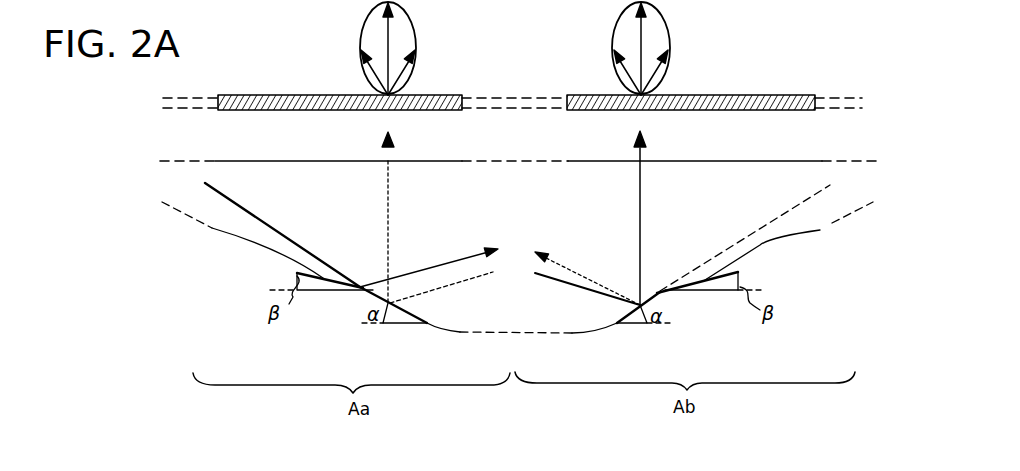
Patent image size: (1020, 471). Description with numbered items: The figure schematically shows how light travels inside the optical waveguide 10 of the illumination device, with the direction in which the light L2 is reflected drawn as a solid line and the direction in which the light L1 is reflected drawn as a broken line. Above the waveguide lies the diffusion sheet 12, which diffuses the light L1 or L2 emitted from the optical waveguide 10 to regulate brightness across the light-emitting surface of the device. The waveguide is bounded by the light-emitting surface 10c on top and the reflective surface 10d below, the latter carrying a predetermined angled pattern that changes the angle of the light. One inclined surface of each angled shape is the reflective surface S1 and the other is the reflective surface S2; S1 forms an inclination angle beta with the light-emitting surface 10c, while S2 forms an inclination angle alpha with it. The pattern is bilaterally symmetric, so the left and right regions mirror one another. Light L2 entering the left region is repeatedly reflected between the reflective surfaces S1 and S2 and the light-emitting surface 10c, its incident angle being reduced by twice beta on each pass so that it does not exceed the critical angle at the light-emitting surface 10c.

The diffusion sheet 12 is at (717, 95).
The optical waveguide 10 is at (807, 213).
The light-emitting surface 10c is at (826, 161).
The reflective surface 10d is at (832, 225).
The reflective surface S1 is at (327, 276).
The reflective surface S2 is at (413, 316).
The light L1 is at (498, 218).
The light L2 is at (503, 218).